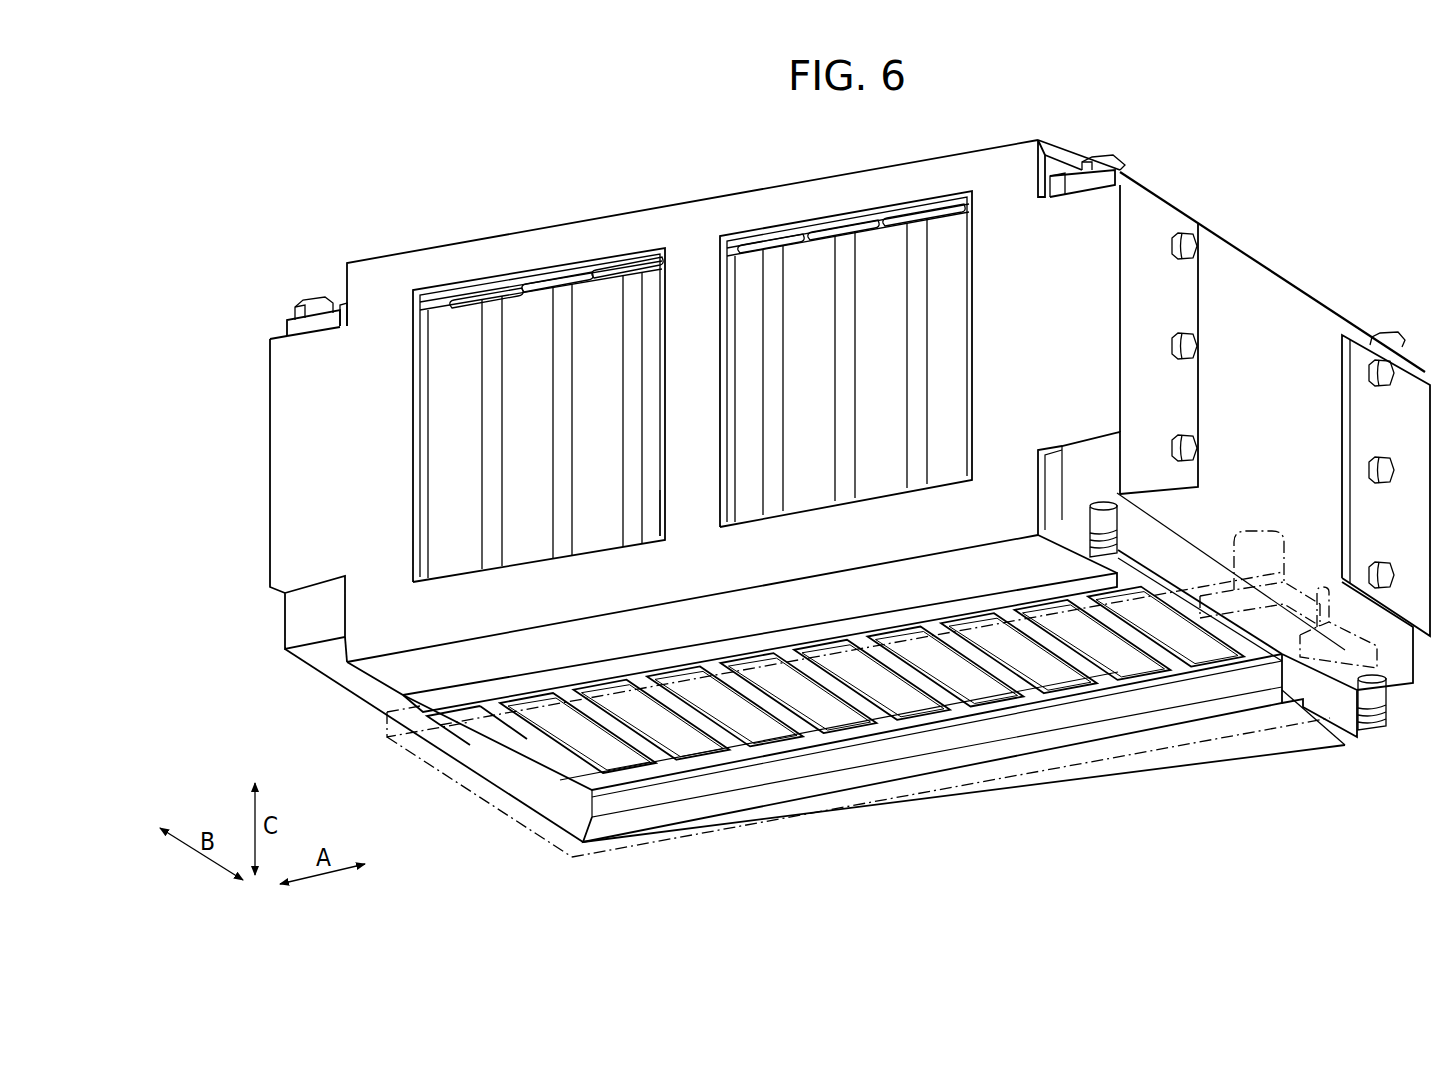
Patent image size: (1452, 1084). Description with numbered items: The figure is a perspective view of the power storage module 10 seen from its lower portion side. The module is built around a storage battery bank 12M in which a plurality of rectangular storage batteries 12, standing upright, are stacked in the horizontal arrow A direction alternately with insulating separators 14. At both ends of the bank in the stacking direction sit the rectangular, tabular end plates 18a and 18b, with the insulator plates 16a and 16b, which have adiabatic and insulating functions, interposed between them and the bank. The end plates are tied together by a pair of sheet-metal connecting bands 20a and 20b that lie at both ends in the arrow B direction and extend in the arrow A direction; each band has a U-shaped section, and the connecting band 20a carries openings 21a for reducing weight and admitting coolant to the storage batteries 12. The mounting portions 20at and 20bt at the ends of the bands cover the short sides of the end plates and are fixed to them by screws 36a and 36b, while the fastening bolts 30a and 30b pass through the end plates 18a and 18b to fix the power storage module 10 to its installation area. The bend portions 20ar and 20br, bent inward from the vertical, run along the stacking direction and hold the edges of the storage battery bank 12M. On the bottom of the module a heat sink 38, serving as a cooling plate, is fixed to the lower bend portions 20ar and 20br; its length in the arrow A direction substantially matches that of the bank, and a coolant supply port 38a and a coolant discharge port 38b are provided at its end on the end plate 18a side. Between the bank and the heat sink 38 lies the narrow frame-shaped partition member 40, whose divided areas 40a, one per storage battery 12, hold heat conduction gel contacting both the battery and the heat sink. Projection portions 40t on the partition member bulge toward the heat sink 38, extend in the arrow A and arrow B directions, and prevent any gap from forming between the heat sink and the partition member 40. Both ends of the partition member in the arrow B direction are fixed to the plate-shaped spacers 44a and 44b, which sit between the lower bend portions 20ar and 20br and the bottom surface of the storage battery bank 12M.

The power storage module 10 is at (803, 126).
The storage battery 12 is at (445, 396).
The storage battery bank 12M is at (358, 372).
The separator 14 is at (632, 448).
The insulator plate 16a is at (1058, 198).
The insulator plate 16b is at (342, 304).
The end plate 18a is at (1212, 228).
The end plate 18b is at (283, 327).
The connecting band 20a is at (455, 240).
The mounting portion 20at is at (1187, 317).
The bend portion 20ar is at (960, 562).
The connecting band 20b is at (1129, 775).
The mounting portion 20bt is at (1365, 405).
The bend portion 20br is at (1231, 762).
The opening 21a is at (660, 495).
The fastening bolt 30a is at (1118, 157).
The fastening bolt 30b is at (312, 303).
The screw 36a is at (1178, 262).
The screw 36b is at (1388, 462).
The heat sink 38 is at (576, 862).
The coolant supply port 38a is at (1262, 527).
The coolant discharge port 38b is at (1327, 586).
The partition member 40 is at (1027, 712).
The divided area 40a is at (967, 685).
The projection portion 40t is at (808, 737).
The spacer 44a is at (1085, 537).
The spacer 44b is at (1288, 705).